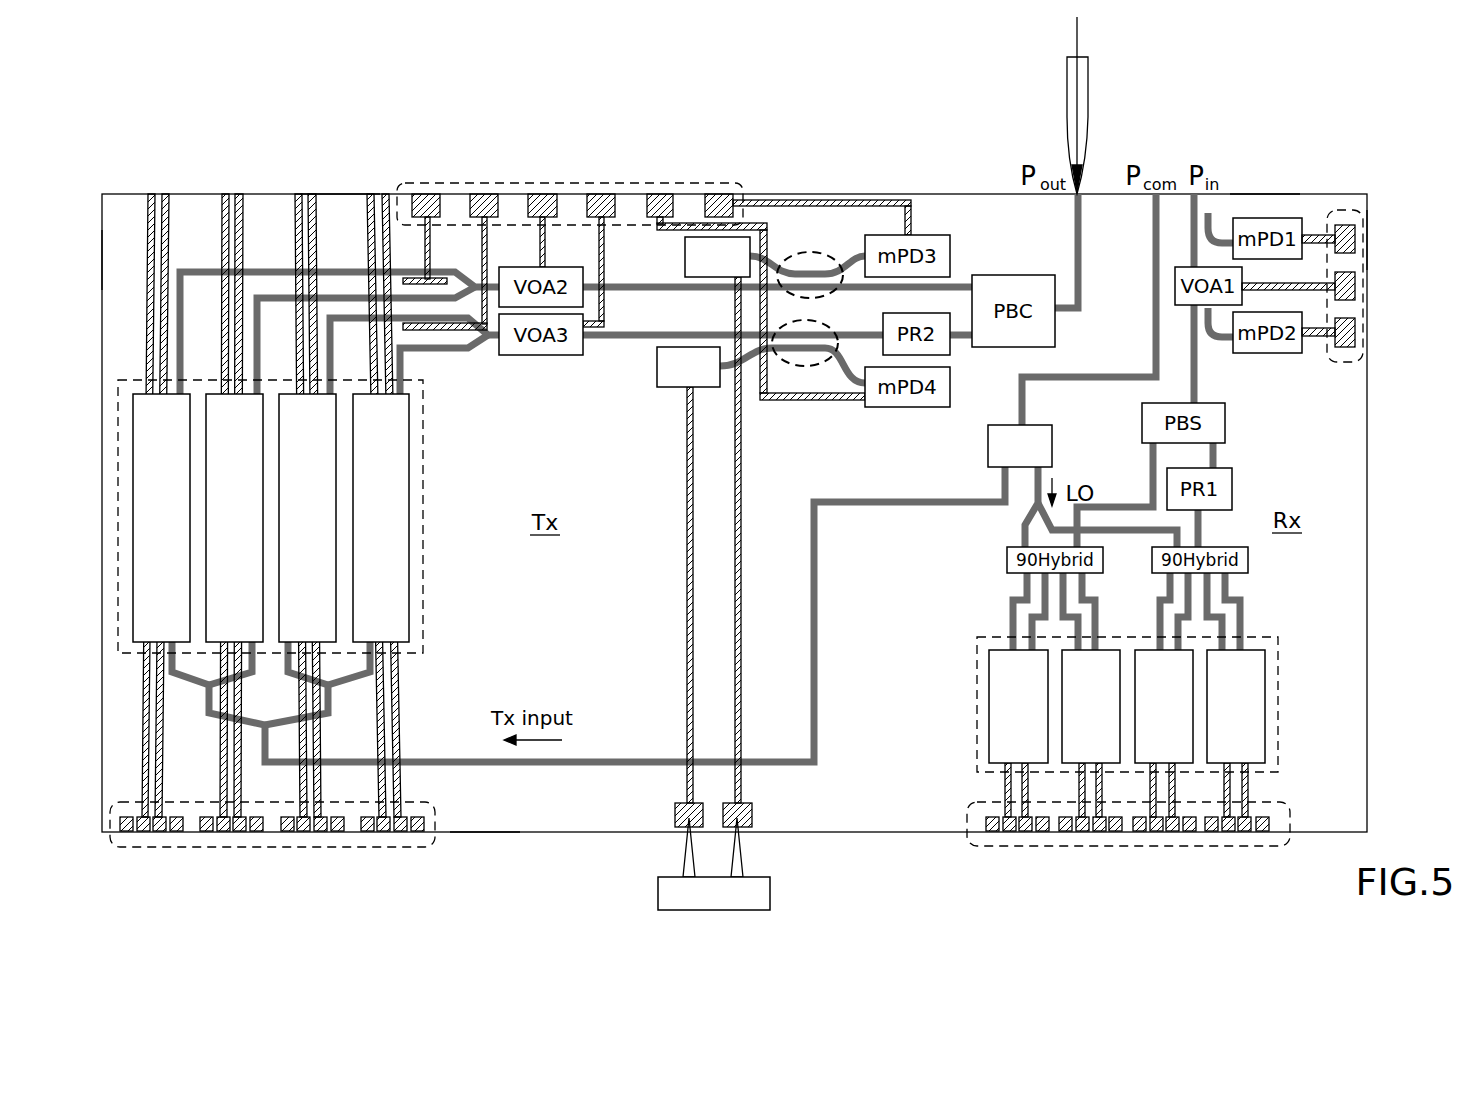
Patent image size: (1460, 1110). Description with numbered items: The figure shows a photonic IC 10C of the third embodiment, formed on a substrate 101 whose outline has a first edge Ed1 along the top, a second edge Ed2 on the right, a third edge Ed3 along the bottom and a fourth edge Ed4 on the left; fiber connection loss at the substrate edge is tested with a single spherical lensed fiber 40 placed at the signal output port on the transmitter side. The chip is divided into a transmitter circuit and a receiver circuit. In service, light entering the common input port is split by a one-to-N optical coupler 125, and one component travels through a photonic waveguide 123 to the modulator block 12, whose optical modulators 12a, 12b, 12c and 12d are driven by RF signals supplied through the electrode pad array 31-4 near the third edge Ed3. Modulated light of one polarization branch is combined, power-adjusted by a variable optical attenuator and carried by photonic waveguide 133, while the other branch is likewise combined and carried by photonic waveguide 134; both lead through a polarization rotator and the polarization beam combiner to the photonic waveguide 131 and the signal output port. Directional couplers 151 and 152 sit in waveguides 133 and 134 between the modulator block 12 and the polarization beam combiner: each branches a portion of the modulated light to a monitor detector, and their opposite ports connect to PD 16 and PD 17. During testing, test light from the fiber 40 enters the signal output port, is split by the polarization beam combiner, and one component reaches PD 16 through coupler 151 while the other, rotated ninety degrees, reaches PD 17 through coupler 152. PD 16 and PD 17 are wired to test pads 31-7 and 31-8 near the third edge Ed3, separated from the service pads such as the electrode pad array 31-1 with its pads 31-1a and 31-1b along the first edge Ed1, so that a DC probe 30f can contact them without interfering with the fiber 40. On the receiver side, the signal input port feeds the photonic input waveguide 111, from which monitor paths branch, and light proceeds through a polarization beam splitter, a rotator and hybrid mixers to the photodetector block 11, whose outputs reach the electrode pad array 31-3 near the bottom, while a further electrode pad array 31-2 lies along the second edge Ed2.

The photonic IC 10C is at (106, 45).
The spherical lensed fiber 40 is at (1067, 88).
The substrate 101 is at (1262, 194).
The electrode pad array 31-2 is at (1337, 210).
The second edge Ed2 is at (1367, 238).
The first edge Ed1 is at (340, 194).
The fourth edge Ed4 is at (102, 258).
The third edge Ed3 is at (487, 832).
The electrode pad group 31-1 is at (573, 165).
The electrode pad 31-1b is at (655, 194).
The electrode pad 31-1a is at (715, 194).
The directional coupler 151 is at (825, 252).
The directional coupler 152 is at (812, 368).
The PD 16 is at (685, 256).
The PD 17 is at (657, 367).
The photonic waveguide 133 is at (675, 289).
The photonic waveguide 134 is at (617, 333).
The photonic waveguide 131 is at (1075, 230).
The photonic input waveguide 111 is at (1200, 378).
The 1:N optical coupler 125 is at (988, 445).
The photonic waveguide 123 is at (810, 605).
The modulator block 12 is at (291, 505).
The optical modulator 12a is at (142, 393).
The optical modulator 12b is at (215, 393).
The optical modulator 12c is at (290, 393).
The optical modulator 12d is at (365, 393).
The photodetector block 11 is at (977, 663).
The electrode pad array 31-4 is at (270, 848).
The electrode pad group 31-3 is at (1126, 848).
The test pad 31-8 is at (675, 813).
The test pad 31-7 is at (752, 813).
The DC probe 30f is at (658, 893).